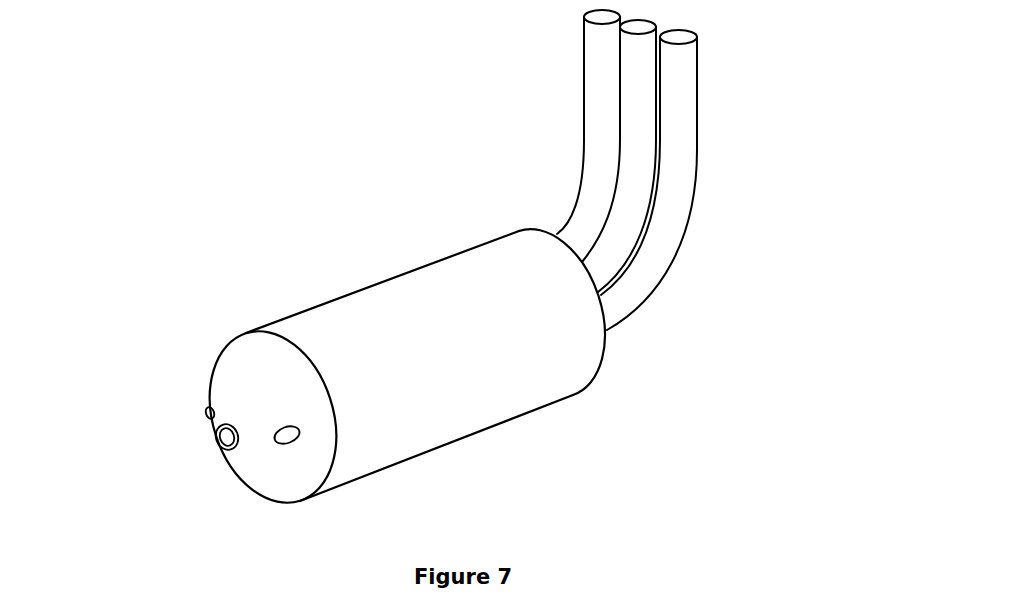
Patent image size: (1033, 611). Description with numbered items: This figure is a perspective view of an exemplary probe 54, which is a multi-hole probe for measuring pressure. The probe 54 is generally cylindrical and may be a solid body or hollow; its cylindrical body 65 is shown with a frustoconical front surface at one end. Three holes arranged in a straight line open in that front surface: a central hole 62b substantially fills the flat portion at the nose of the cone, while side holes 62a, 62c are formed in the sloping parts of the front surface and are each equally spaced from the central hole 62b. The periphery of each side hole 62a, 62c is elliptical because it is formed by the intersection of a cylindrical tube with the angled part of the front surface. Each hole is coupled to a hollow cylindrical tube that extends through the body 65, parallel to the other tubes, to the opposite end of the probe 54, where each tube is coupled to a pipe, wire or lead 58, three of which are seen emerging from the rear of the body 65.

The probe 54 is at (441, 267).
The pipe, wire or lead 58 is at (606, 58).
The side hole 62a is at (207, 410).
The central hole 62b is at (218, 434).
The side hole 62c is at (278, 437).
The body 65 is at (435, 395).